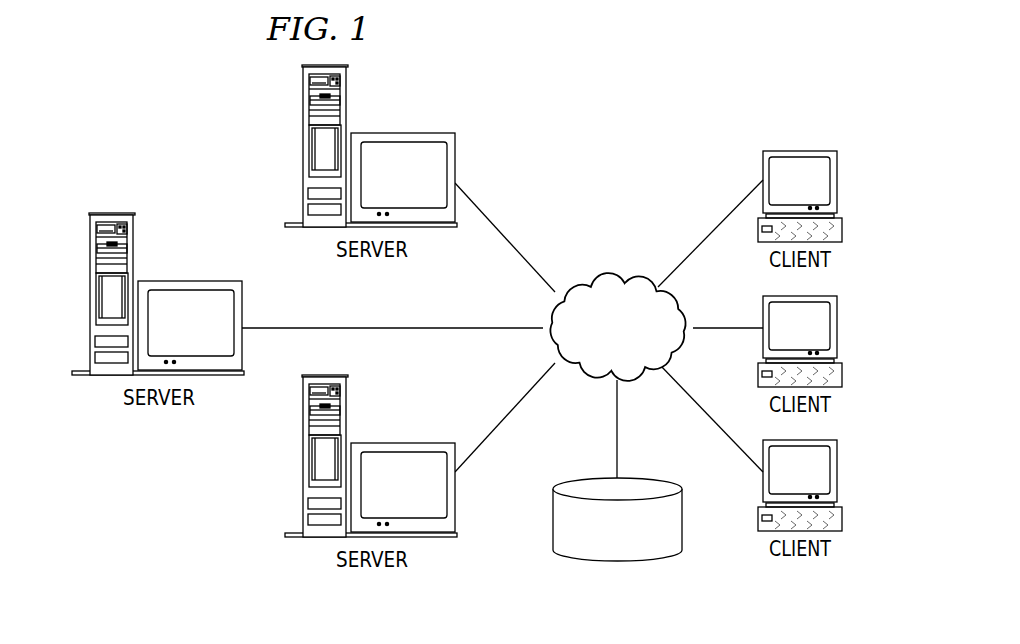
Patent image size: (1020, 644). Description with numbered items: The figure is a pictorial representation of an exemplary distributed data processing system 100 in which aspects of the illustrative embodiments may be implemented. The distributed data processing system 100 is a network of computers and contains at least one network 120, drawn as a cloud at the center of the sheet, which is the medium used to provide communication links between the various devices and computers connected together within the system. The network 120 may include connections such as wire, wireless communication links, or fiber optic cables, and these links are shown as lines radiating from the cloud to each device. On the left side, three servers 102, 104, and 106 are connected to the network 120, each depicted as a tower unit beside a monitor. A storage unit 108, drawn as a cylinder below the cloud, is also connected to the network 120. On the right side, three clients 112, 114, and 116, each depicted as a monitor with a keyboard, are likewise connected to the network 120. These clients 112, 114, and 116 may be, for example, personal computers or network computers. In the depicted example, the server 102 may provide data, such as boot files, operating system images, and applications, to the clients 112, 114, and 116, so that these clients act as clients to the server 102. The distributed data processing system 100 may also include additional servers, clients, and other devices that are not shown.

The distributed data processing system 100 is at (673, 159).
The server 102 is at (303, 149).
The server 104 is at (90, 298).
The server 106 is at (303, 459).
The storage unit 108 is at (600, 563).
The client 112 is at (837, 184).
The client 114 is at (837, 328).
The client 116 is at (837, 470).
The network 120 is at (588, 277).